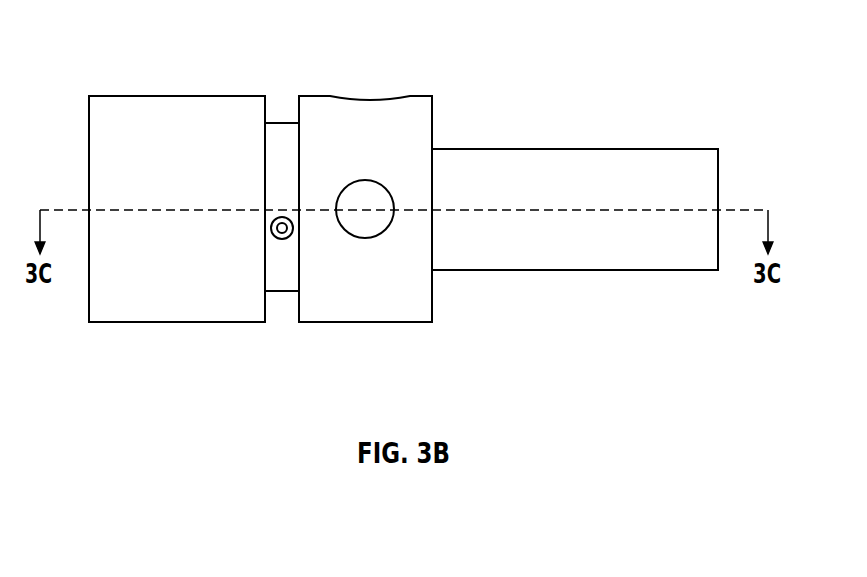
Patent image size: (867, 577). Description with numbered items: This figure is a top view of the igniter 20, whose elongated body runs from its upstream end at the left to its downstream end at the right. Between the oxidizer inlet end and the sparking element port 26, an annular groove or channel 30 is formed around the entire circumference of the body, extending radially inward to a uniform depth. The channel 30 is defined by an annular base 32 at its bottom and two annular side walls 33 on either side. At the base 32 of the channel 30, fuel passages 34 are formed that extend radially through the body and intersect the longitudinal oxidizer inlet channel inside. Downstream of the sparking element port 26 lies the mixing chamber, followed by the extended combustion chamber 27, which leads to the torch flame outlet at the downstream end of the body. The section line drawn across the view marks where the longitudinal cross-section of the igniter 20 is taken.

The igniter 20 is at (660, 62).
The sparking element port 26 is at (363, 225).
The extended combustion chamber 27 is at (658, 271).
The annular groove or channel 30 is at (264, 275).
The annular base 32 is at (282, 291).
The annular side walls 33 is at (264, 108).
The fuel passages 34 is at (272, 236).